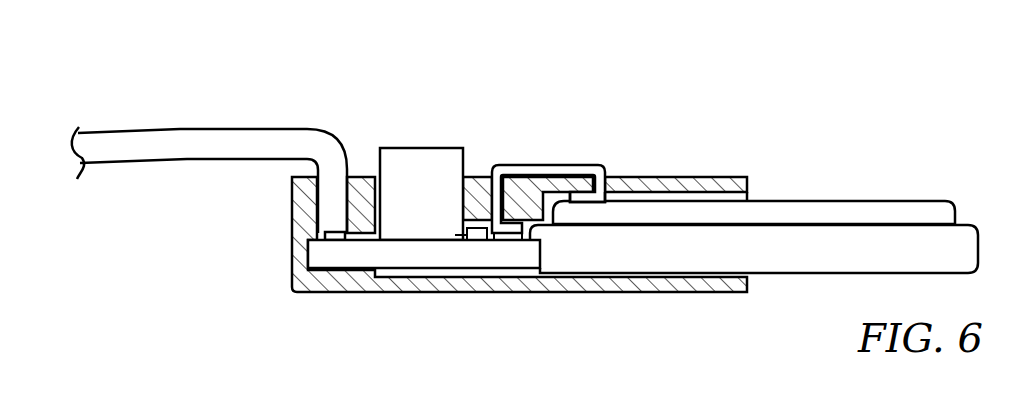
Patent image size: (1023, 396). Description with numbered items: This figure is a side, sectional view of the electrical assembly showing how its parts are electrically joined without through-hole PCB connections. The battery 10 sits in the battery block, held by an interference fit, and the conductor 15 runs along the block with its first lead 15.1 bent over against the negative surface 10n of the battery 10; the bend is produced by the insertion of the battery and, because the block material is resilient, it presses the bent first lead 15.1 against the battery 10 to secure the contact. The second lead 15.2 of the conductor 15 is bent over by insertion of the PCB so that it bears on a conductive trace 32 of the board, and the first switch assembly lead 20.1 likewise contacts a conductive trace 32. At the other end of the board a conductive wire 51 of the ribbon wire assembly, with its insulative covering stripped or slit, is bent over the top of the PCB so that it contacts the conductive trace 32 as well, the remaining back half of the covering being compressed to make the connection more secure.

The battery 10 is at (754, 143).
The negative surface 10n is at (798, 202).
The conductor 15 is at (576, 219).
The first lead 15.1 is at (582, 197).
The second lead 15.2 is at (507, 236).
The first switch assembly lead 20.1 is at (472, 230).
The conductive trace 32 is at (484, 240).
The conductive wire 51 is at (132, 395).